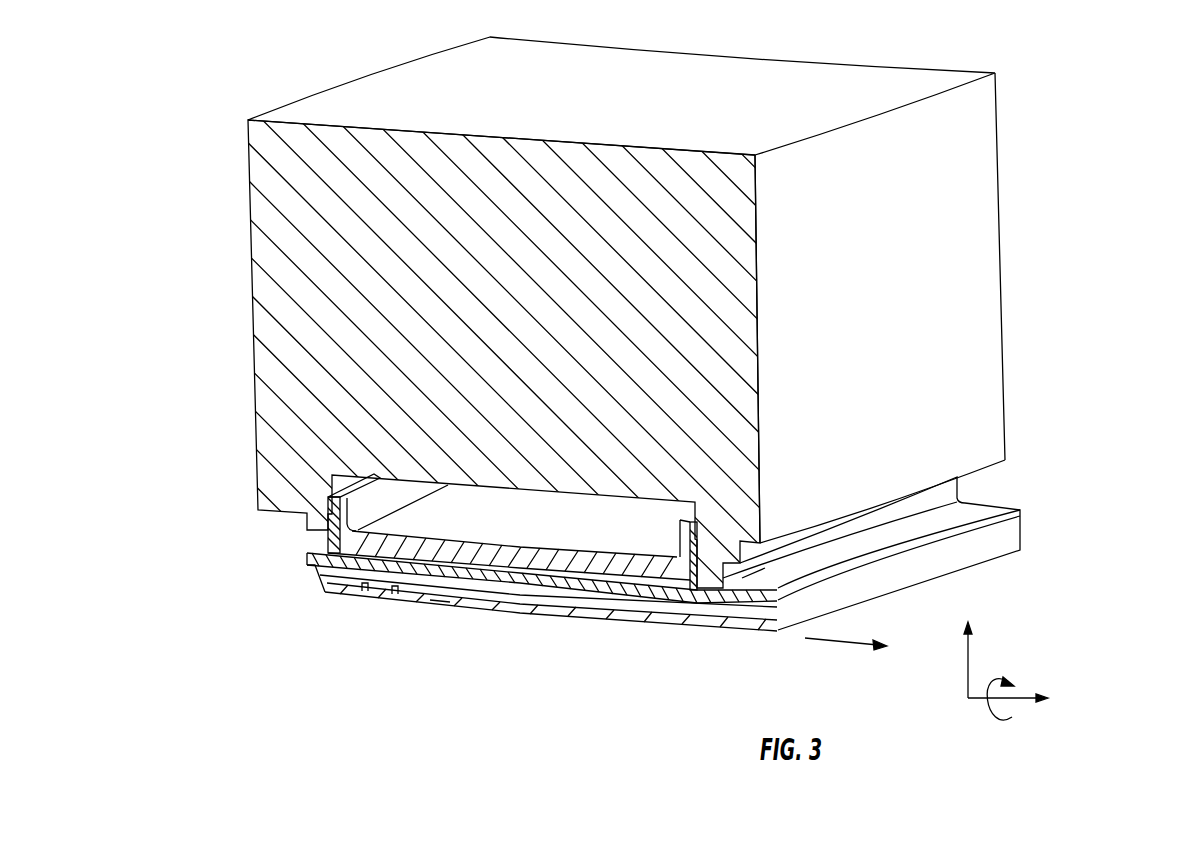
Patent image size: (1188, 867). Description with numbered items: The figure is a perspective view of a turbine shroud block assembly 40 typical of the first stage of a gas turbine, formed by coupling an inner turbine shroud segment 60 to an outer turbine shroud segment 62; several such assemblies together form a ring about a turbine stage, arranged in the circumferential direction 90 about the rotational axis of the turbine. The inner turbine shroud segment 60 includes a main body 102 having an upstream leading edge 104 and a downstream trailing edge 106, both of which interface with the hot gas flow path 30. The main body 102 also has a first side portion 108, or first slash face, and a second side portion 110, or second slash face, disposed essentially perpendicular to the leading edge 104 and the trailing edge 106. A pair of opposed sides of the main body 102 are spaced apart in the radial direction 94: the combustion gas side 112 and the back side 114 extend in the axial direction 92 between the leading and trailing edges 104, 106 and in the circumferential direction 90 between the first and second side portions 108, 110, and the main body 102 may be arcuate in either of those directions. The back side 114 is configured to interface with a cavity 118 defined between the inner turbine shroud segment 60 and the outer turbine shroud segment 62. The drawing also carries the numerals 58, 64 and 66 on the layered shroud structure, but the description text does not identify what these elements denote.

The hot gas flow path 30 is at (807, 638).
The turbine shroud block assembly 40 is at (1100, 232).
The shroud plate 58 is at (603, 620).
The inner turbine shroud segment 60 is at (1022, 545).
The outer turbine shroud segment 62 is at (997, 138).
The bottom layer 64 is at (440, 600).
The tabs 66 is at (405, 600).
The circumferential direction 90 is at (988, 712).
The axial direction 92 is at (1023, 693).
The radial direction 94 is at (968, 660).
The main body 102 is at (507, 565).
The leading edge 104 is at (323, 583).
The trailing edge 106 is at (965, 545).
The first side portion 108 is at (655, 607).
The second side portion 110 is at (1022, 510).
The combustion gas side 112 is at (707, 625).
The back side 114 is at (608, 532).
The cavity 118 is at (585, 524).